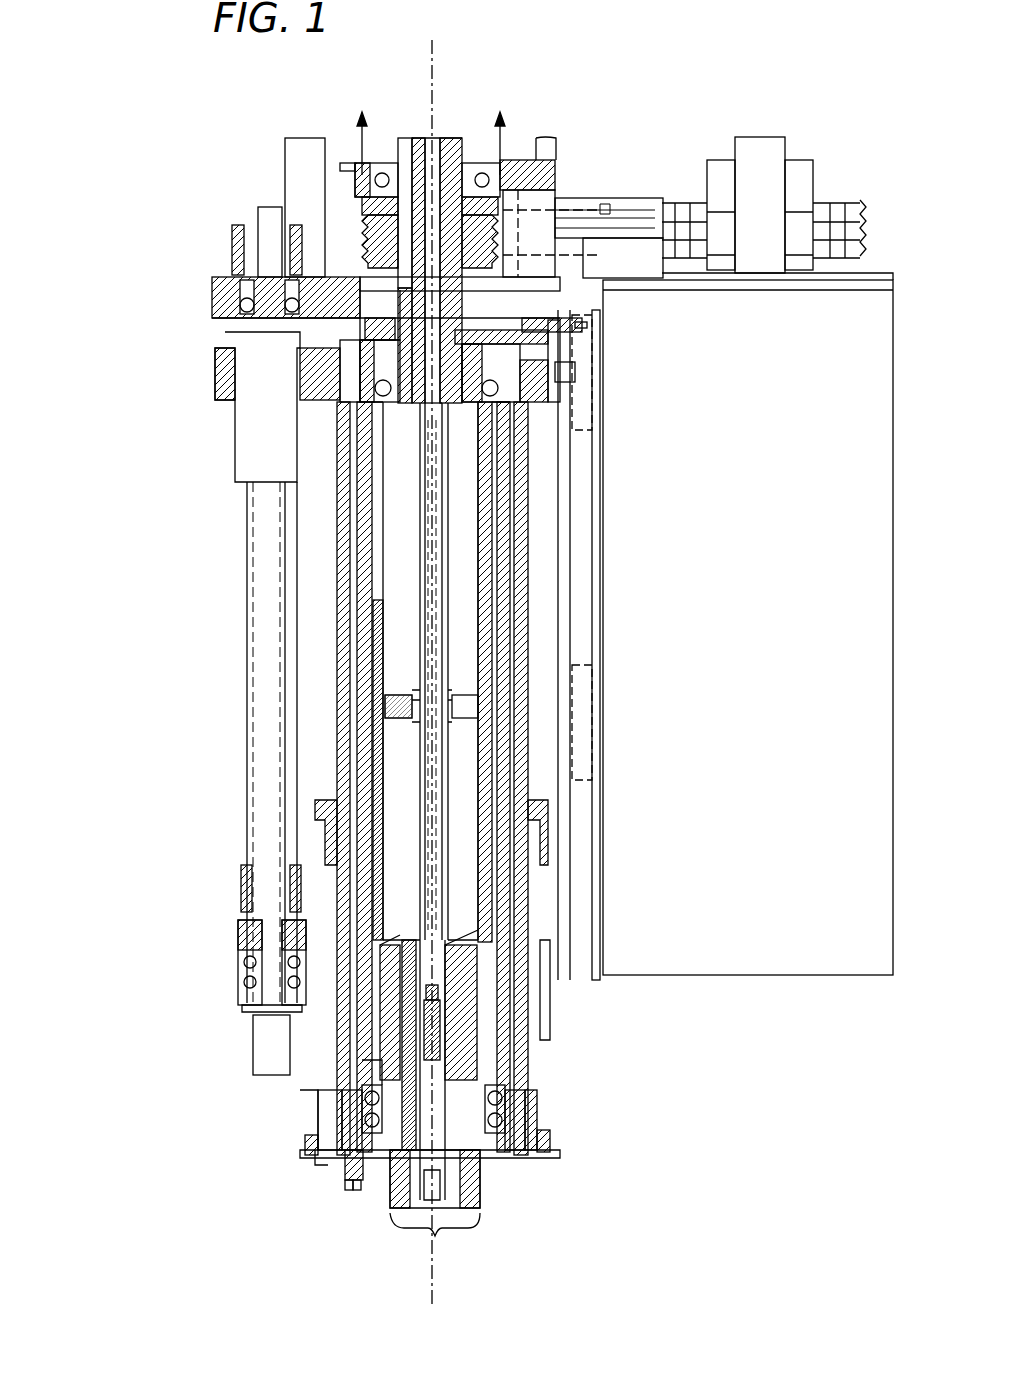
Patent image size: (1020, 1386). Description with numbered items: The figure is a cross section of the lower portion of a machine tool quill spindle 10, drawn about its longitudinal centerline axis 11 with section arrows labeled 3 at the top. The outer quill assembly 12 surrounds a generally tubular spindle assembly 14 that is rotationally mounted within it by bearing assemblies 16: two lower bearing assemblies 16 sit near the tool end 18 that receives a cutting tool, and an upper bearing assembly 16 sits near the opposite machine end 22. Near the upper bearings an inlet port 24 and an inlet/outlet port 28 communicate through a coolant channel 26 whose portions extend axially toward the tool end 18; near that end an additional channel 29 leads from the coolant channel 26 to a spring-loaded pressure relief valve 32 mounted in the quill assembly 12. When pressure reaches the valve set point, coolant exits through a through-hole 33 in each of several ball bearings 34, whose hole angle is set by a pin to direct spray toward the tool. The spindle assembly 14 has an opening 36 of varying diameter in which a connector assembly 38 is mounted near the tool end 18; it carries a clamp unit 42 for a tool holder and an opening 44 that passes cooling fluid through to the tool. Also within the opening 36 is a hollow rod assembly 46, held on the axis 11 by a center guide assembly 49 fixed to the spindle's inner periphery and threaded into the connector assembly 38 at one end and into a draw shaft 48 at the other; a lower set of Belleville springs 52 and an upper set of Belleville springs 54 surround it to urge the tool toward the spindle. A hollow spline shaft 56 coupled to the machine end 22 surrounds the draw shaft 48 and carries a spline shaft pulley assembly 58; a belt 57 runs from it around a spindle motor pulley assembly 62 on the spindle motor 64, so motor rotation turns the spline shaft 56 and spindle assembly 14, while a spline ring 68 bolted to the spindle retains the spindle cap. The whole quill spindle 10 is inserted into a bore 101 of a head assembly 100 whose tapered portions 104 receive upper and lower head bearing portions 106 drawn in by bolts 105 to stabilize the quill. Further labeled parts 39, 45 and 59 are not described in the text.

The quill spindle 10 is at (130, 298).
The section line 3 is at (435, 122).
The longitudinal centerline axis 11 is at (435, 1278).
The quill assembly 12 is at (528, 548).
The spindle assembly 14 is at (495, 608).
The bearing assemblies 16 is at (330, 315).
The tool end 18 is at (435, 1240).
The machine end 22 is at (500, 358).
The inlet port 24 is at (305, 398).
The coolant channel 26 is at (347, 620).
The inlet/outlet port 28 is at (540, 392).
The additional channel 29 is at (380, 1072).
The pressure relief valve 32 is at (350, 1162).
The through-hole 33 is at (355, 1180).
The ball bearings 34 is at (352, 1182).
The opening 36 is at (483, 815).
The connector assembly 38 is at (470, 990).
The feed screw 39 is at (415, 990).
The clamp unit 42 is at (462, 1162).
The opening 44 is at (535, 1100).
The collet 45 is at (445, 995).
The hollow rod assembly 46 is at (438, 905).
The draw shaft 48 is at (420, 140).
The center guide assembly 49 is at (410, 715).
The lower set of Belleville springs 52 is at (420, 730).
The upper set of Belleville springs 54 is at (415, 690).
The hollow spline shaft 56 is at (448, 140).
The belt 57 is at (600, 203).
The spline shaft pulley assembly 58 is at (553, 160).
The upper bearing 59 is at (355, 167).
The spindle motor pulley assembly 62 is at (668, 208).
The spindle motor 64 is at (822, 366).
The spline ring 68 is at (392, 258).
The head assembly 100 is at (320, 1115).
The bore 101 is at (530, 942).
The tapered portions 104 is at (548, 830).
The bolts 105 is at (315, 1152).
The head bearing portions 106 is at (318, 820).